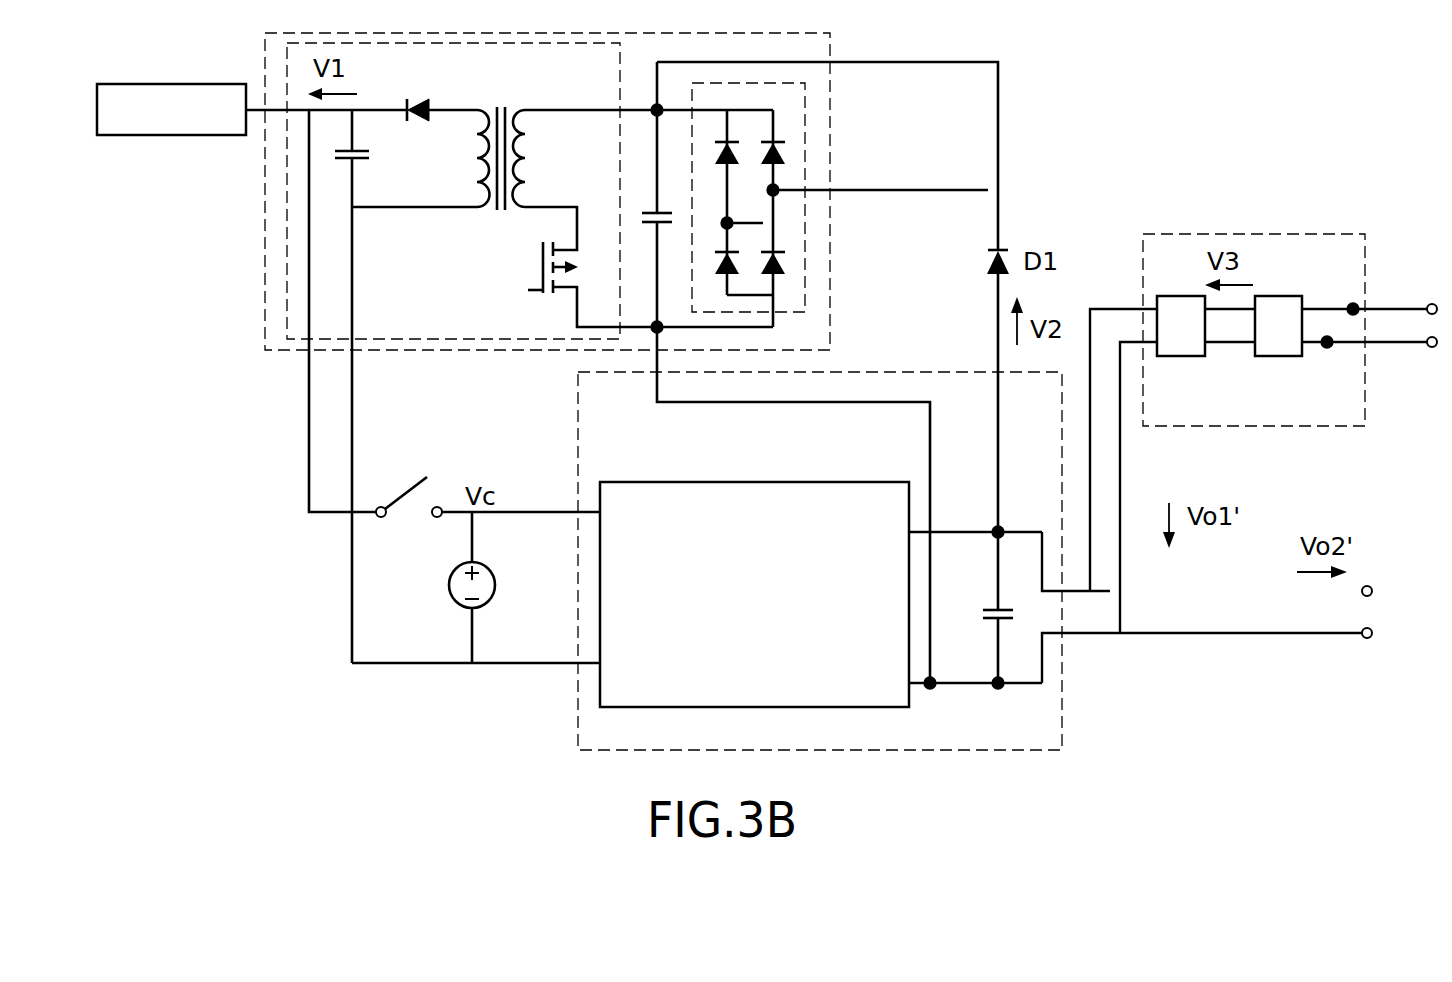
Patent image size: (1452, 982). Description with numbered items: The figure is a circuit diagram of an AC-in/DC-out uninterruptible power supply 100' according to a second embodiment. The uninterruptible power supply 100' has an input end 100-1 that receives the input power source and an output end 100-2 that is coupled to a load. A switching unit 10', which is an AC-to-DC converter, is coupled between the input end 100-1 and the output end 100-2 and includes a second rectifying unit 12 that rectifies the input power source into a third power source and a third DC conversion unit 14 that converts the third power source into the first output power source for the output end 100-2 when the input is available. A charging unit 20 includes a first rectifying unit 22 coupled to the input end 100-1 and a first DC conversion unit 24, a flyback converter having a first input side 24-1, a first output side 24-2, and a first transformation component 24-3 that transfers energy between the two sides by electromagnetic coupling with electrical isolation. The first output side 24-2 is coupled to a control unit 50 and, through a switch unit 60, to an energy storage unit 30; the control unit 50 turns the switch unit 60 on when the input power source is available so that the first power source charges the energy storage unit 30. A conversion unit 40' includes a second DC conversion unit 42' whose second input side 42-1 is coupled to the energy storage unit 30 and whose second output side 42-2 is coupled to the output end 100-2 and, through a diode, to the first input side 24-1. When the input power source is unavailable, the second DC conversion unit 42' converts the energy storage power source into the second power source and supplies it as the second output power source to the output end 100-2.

The uninterruptible power supply 100' is at (1127, 54).
The switching unit 10' is at (1259, 366).
The second rectifying unit 12 is at (1272, 345).
The third DC conversion unit 14 is at (1172, 345).
The charging unit 20 is at (273, 298).
The first rectifying unit 22 is at (805, 100).
The first DC conversion unit 24 is at (297, 237).
The first input side 24-1 is at (635, 108).
The first output side 24-2 is at (308, 419).
The first transformation component 24-3 is at (502, 108).
The energy storage unit 30 is at (458, 587).
The conversion unit 40' is at (865, 561).
The second DC conversion unit 42' is at (821, 563).
The second input side 42-1 is at (530, 513).
The second output side 42-2 is at (958, 530).
The control unit 50 is at (123, 123).
The switch unit 60 is at (437, 487).
The input end 100-1 is at (1403, 307).
The output end 100-2 is at (1122, 467).